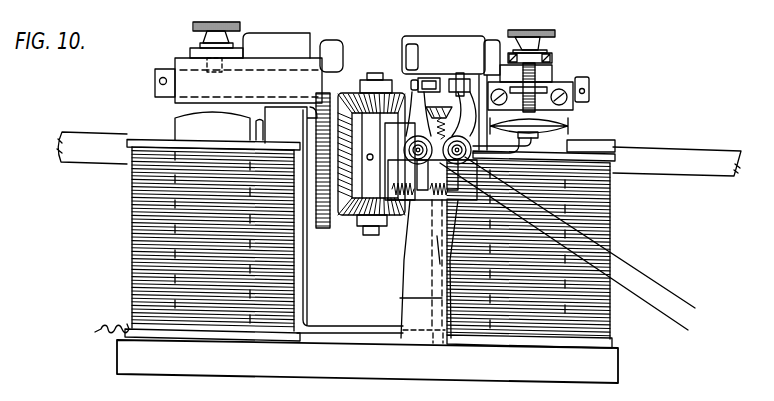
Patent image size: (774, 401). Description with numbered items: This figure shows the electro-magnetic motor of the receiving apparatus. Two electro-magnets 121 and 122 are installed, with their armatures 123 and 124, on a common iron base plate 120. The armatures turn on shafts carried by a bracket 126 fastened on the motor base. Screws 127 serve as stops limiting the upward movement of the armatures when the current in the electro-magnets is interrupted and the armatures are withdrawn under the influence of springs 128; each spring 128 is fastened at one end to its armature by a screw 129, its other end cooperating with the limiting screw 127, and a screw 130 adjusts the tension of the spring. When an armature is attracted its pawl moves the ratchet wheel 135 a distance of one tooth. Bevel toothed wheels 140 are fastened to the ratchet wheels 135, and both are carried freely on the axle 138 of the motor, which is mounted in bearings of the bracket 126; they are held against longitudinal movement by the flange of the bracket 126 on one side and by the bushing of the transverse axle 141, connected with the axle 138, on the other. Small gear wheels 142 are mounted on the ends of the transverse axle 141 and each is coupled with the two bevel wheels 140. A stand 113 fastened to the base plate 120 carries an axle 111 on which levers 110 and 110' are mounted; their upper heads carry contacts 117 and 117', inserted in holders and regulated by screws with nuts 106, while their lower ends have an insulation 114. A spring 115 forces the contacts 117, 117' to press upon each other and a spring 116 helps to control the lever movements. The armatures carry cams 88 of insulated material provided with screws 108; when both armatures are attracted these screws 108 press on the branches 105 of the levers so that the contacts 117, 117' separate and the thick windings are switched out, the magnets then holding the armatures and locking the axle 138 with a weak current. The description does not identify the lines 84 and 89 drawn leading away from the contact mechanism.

The wire 84 is at (582, 232).
The cam 88 is at (589, 84).
The wire 89 is at (564, 258).
The branch 105 is at (540, 134).
The nut 106 is at (474, 76).
The screw 108 is at (548, 57).
The lever 110 is at (462, 48).
The lever 110' is at (395, 72).
The axle 111 is at (400, 161).
The stand 113 is at (409, 310).
The insulation 114 is at (429, 269).
The spring 115 is at (430, 265).
The spring 116 is at (431, 244).
The contact 117 is at (445, 83).
The contact 117' is at (413, 83).
The base plate 120 is at (367, 361).
The electro-magnet 121 is at (131, 224).
The electro-magnet 122 is at (607, 214).
The armature 123 is at (181, 96).
The armature 124 is at (568, 116).
The bracket 126 is at (404, 295).
The screw 127 is at (555, 62).
The spring 128 is at (190, 48).
The screw 129 is at (575, 70).
The screw 130 is at (555, 29).
The ratchet wheel 135 is at (312, 243).
The axle 138 is at (737, 171).
The bevel toothed wheel 140 is at (329, 226).
The transverse axle 141 is at (374, 155).
The gear wheel 142 is at (385, 234).